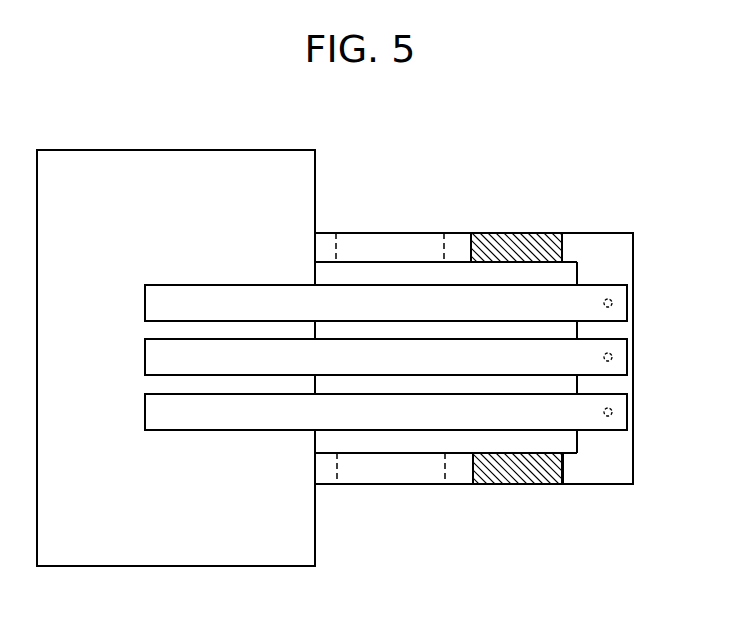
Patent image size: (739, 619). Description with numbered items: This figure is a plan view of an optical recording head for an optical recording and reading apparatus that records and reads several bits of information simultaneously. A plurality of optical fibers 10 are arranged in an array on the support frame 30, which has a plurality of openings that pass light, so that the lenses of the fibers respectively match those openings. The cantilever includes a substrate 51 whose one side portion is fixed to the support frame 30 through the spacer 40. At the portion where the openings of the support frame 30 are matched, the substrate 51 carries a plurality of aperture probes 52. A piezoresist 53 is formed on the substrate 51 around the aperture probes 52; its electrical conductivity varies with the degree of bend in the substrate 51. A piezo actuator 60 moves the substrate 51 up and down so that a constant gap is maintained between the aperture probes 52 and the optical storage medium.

The optical fibers 10 is at (633, 283).
The support frame 30 is at (577, 443).
The spacer 40 is at (218, 158).
The substrate 51 is at (606, 233).
The aperture probes 52 is at (612, 357).
The piezoresist 53 is at (519, 233).
The piezo actuator 60 is at (397, 233).